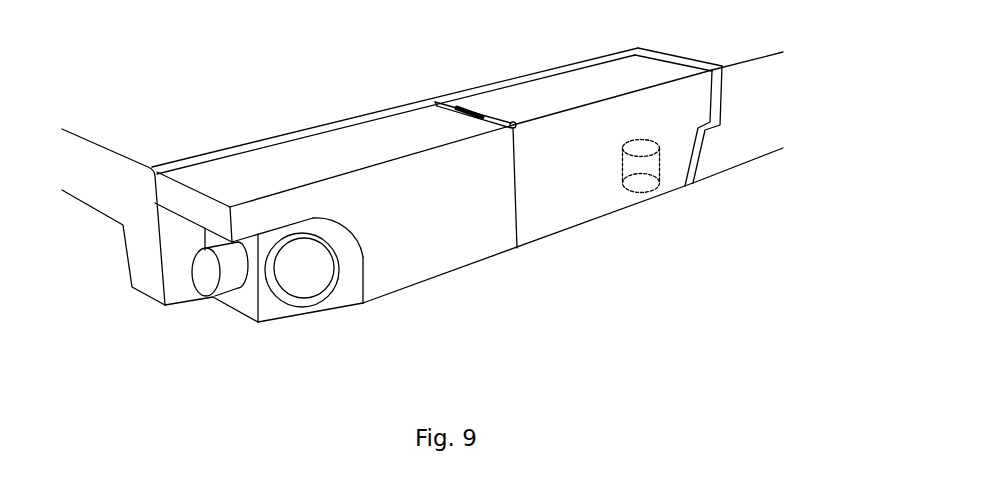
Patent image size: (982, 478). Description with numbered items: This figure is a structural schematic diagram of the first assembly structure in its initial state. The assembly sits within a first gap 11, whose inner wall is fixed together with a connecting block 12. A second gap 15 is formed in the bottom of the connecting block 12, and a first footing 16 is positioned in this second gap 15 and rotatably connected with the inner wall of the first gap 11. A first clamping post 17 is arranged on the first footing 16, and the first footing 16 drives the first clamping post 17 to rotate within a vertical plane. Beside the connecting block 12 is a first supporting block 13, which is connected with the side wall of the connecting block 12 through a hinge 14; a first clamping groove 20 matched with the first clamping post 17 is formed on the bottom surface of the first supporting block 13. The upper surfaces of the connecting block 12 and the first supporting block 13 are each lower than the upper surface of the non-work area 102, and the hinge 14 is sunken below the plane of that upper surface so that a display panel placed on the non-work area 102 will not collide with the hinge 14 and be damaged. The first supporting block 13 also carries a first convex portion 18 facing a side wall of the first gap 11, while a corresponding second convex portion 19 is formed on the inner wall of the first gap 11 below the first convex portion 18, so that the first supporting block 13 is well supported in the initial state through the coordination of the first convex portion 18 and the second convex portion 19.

The non-work area 102 is at (105, 163).
The first gap 11 is at (362, 105).
The connecting block 12 is at (435, 237).
The first supporting block 13 is at (583, 190).
The hinge 14 is at (477, 112).
The second gap 15 is at (349, 294).
The first footing 16 is at (267, 307).
The first clamping post 17 is at (207, 277).
The first convex portion 18 is at (698, 85).
The second convex portion 19 is at (713, 157).
The first clamping groove 20 is at (643, 182).